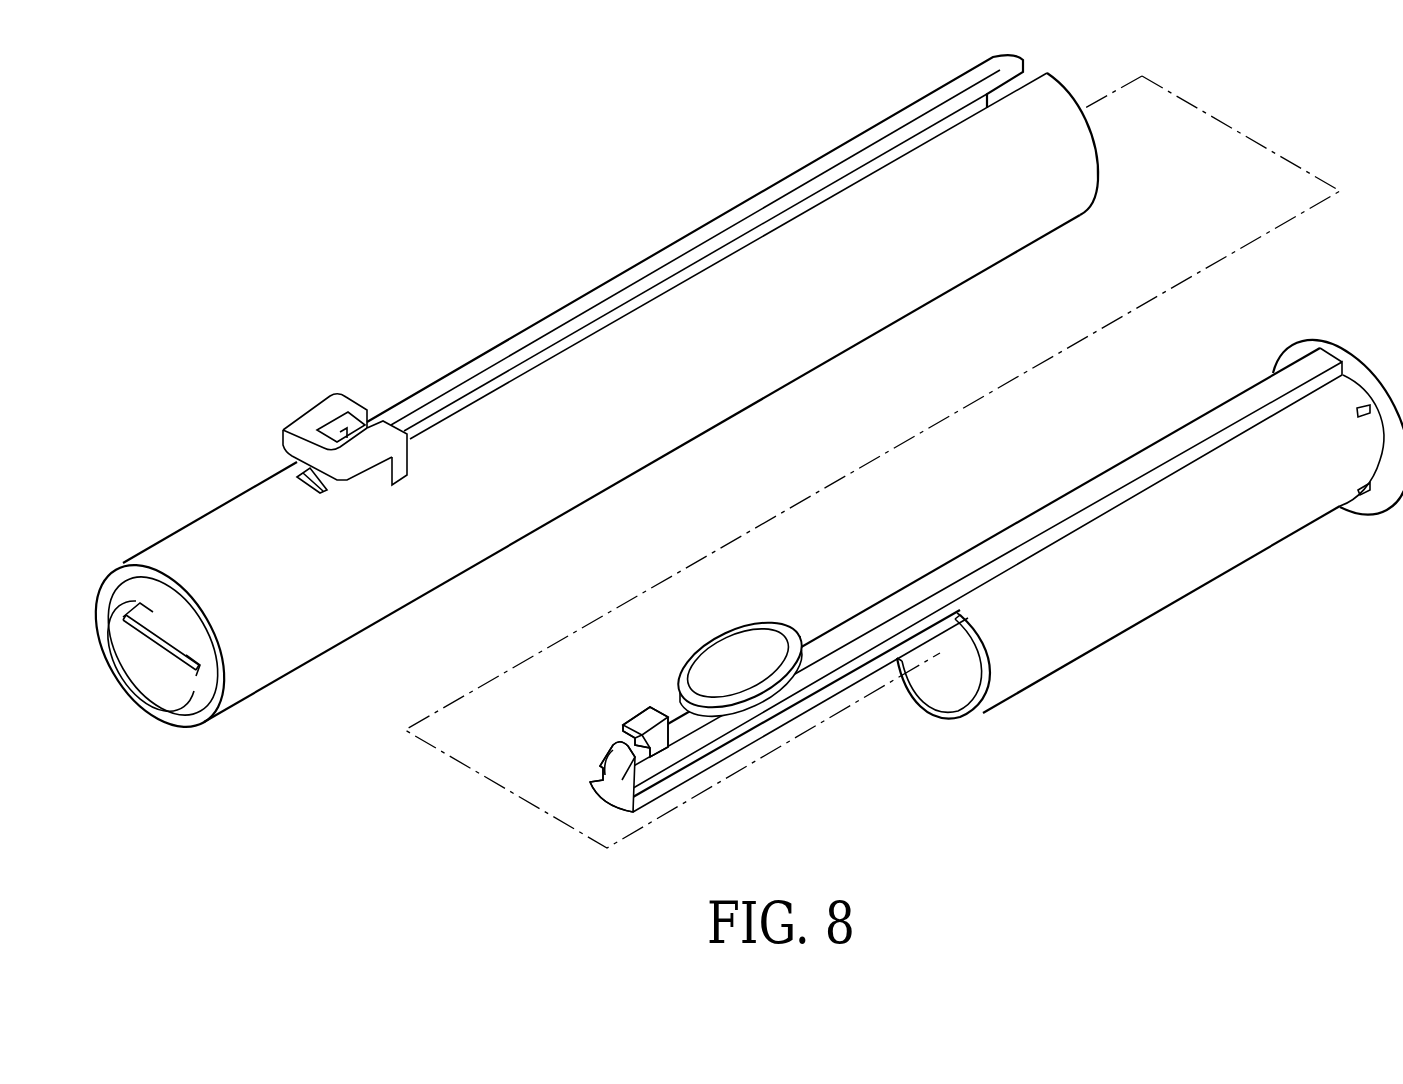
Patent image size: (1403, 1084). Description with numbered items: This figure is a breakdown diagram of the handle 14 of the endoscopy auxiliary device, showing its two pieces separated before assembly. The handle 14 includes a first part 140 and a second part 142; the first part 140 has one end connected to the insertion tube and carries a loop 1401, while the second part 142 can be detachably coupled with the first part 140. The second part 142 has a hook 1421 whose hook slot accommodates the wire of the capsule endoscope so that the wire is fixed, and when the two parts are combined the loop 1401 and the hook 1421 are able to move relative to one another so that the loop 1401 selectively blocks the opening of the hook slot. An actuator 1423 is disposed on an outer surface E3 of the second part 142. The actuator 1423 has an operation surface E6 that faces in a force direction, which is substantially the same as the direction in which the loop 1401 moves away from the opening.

The handle 14 is at (1189, 745).
The first part 140 is at (664, 226).
The loop 1401 is at (313, 420).
The second part 142 is at (1204, 610).
The hook 1421 is at (638, 718).
The actuator 1423 is at (765, 633).
The outer surface E3 is at (930, 575).
The operation surface E6 is at (740, 650).